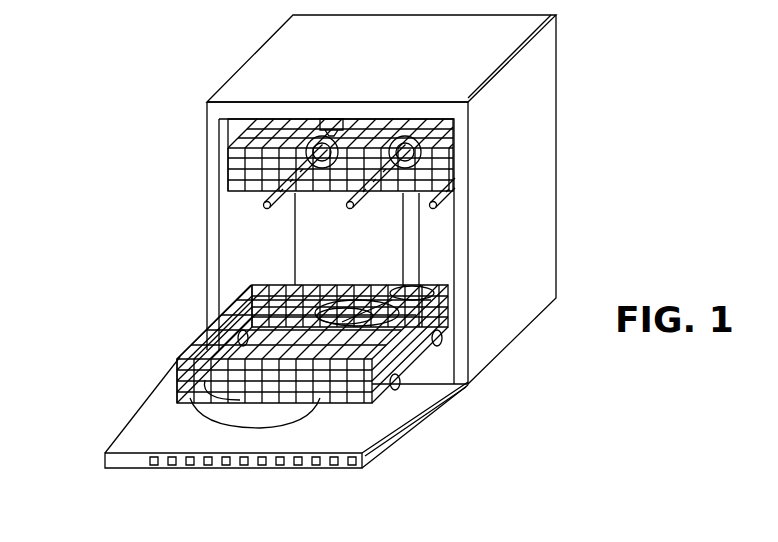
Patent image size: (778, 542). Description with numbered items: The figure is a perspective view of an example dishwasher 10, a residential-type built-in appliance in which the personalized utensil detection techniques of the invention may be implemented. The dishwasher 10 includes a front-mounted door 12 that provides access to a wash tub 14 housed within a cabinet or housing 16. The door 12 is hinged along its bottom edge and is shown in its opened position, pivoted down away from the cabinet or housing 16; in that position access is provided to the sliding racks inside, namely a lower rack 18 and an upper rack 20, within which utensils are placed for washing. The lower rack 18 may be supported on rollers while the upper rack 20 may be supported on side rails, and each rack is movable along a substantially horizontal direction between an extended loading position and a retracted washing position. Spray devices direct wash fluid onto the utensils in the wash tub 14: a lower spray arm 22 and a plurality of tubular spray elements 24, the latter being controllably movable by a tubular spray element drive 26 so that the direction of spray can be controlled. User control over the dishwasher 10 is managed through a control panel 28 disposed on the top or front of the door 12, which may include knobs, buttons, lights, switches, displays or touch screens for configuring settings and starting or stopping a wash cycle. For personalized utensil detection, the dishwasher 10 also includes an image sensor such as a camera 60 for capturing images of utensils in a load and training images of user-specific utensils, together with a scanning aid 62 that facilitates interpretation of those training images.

The dishwasher 10 is at (195, 50).
The door 12 is at (115, 437).
The wash tub 14 is at (258, 50).
The cabinet or housing 16 is at (222, 285).
The lower rack 18 is at (193, 347).
The upper rack 20 is at (232, 157).
The lower spray arm 22 is at (437, 285).
The tubular spray elements 24 is at (268, 207).
The tubular spray element drive 26 is at (318, 192).
The control panel 28 is at (372, 448).
The camera 60 is at (335, 119).
The scanning aid 62 is at (243, 402).